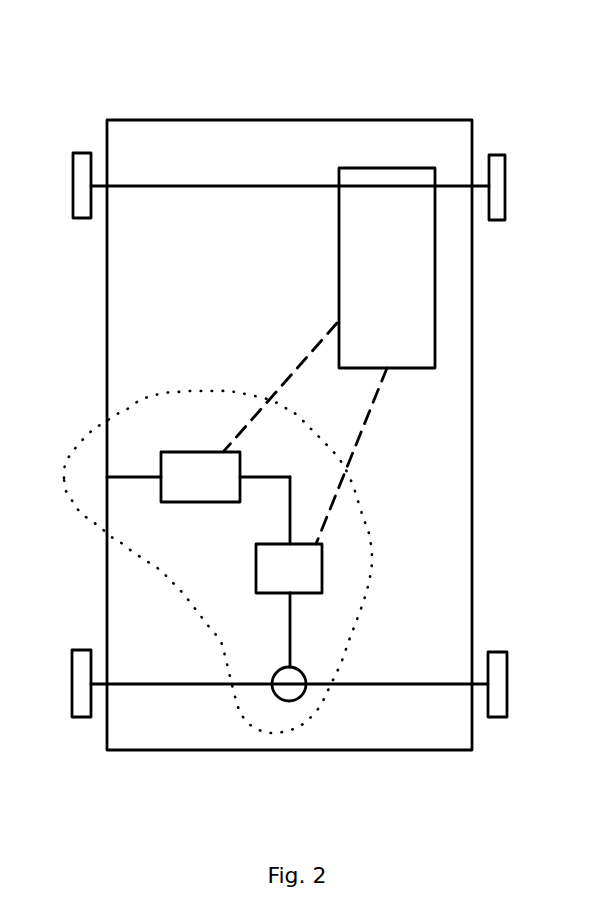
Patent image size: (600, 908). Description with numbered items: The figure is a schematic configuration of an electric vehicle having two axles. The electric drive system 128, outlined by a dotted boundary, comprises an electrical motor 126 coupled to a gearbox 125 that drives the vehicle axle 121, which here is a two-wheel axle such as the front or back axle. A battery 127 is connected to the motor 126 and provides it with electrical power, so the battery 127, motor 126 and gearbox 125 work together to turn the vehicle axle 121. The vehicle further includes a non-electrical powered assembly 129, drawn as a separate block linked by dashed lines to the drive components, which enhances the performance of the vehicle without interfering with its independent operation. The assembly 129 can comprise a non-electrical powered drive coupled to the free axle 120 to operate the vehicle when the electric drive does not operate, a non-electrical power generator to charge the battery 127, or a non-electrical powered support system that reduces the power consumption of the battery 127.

The free axle 120 is at (202, 186).
The vehicle axle 121 is at (415, 684).
The gearbox 125 is at (290, 686).
The electrical motor 126 is at (289, 568).
The battery 127 is at (200, 477).
The electric drive system 128 is at (173, 420).
The non-electrical powered assembly 129 is at (387, 268).